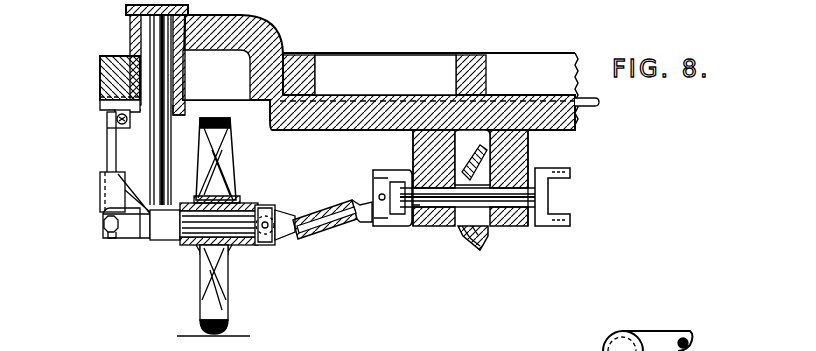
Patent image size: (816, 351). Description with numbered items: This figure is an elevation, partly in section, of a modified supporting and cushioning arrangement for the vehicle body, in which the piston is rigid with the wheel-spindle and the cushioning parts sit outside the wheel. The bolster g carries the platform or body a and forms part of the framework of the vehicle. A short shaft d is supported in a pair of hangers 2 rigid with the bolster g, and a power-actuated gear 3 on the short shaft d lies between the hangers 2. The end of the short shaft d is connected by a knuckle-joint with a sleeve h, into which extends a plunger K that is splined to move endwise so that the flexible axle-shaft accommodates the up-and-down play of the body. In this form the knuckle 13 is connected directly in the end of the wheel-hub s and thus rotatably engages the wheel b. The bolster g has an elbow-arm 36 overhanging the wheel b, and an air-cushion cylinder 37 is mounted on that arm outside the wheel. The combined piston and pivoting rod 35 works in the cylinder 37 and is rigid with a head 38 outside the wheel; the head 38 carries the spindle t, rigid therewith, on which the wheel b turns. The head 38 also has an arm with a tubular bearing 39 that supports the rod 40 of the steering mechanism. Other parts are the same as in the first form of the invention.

The elbow-arm 36 is at (262, 40).
The air-cushion cylinder 37 is at (204, 77).
The bolster g is at (412, 74).
The platform a is at (468, 39).
The piston and pivoting rod 35 is at (112, 124).
The rod of the steering mechanism 40 is at (107, 150).
The tubular bearing 39 is at (100, 192).
The head 38 is at (150, 240).
The wheel-hub s is at (205, 250).
The spindle t is at (221, 160).
The wheel b is at (222, 322).
The knuckle 13 is at (272, 240).
The plunger K is at (290, 213).
The sleeve h is at (320, 200).
The hanger 2 is at (412, 162).
The short shaft d is at (540, 199).
The power-actuated gear 3 is at (472, 245).